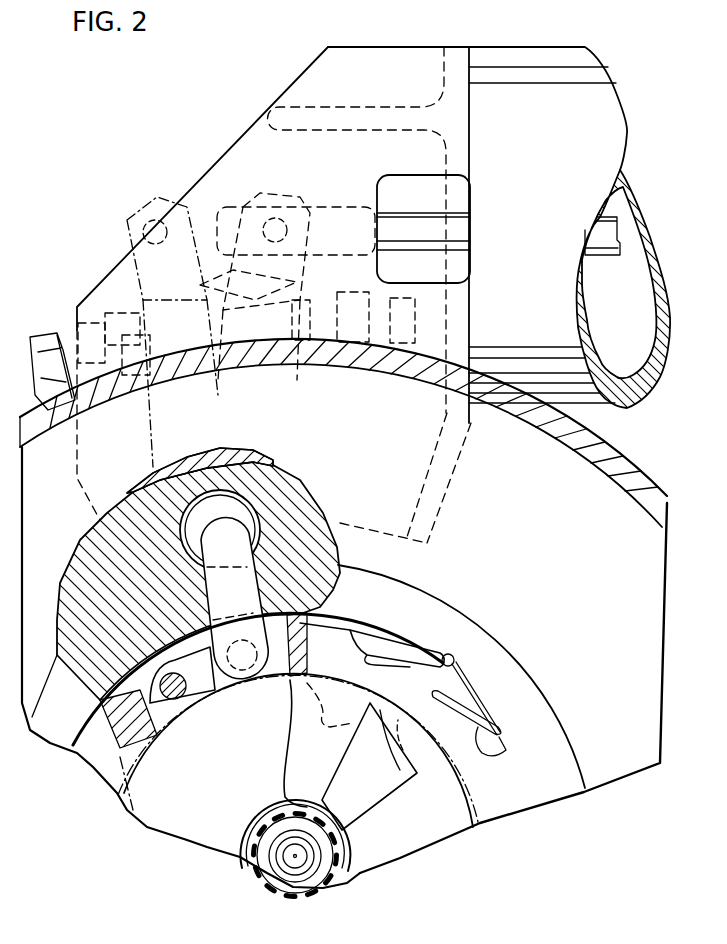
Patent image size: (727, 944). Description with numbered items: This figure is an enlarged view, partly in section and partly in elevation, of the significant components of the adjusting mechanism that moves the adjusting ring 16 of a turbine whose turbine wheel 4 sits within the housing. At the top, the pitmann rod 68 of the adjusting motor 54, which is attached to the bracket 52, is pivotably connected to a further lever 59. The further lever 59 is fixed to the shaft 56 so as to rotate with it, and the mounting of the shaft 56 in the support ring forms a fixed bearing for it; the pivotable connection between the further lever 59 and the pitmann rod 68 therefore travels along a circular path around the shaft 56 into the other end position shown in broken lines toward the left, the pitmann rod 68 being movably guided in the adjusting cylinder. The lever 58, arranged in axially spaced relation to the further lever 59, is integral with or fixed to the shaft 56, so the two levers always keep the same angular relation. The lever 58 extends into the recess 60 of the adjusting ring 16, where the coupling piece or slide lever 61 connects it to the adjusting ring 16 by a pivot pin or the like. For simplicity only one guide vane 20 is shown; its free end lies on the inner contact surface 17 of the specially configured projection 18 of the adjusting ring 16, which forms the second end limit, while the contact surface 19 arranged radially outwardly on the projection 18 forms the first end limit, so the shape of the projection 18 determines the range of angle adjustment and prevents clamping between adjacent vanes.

The turbine wheel 4 is at (373, 790).
The adjusting ring 16 is at (120, 758).
The inner contact surface 17 is at (497, 757).
The projection 18 is at (474, 710).
The contact surface 19 is at (457, 697).
The guide vane 20 is at (412, 645).
The bracket 52 is at (380, 72).
The adjusting motor 54 is at (523, 75).
The shaft 56 is at (205, 470).
The lever 58 is at (207, 583).
The further lever 59 is at (210, 298).
The recess 60 is at (83, 753).
The slide lever 61 is at (208, 683).
The pitmann rod 68 is at (410, 235).